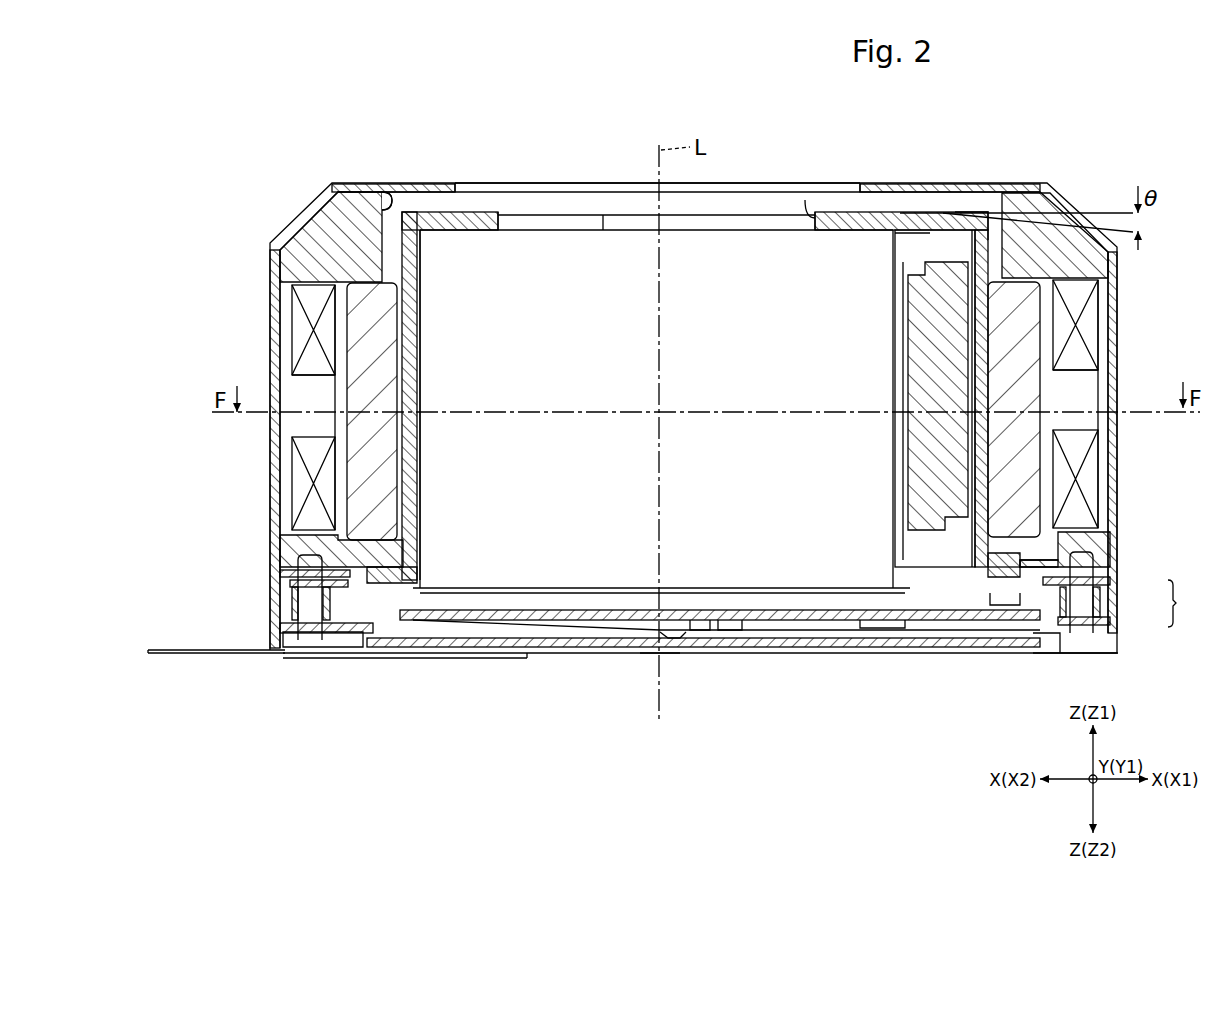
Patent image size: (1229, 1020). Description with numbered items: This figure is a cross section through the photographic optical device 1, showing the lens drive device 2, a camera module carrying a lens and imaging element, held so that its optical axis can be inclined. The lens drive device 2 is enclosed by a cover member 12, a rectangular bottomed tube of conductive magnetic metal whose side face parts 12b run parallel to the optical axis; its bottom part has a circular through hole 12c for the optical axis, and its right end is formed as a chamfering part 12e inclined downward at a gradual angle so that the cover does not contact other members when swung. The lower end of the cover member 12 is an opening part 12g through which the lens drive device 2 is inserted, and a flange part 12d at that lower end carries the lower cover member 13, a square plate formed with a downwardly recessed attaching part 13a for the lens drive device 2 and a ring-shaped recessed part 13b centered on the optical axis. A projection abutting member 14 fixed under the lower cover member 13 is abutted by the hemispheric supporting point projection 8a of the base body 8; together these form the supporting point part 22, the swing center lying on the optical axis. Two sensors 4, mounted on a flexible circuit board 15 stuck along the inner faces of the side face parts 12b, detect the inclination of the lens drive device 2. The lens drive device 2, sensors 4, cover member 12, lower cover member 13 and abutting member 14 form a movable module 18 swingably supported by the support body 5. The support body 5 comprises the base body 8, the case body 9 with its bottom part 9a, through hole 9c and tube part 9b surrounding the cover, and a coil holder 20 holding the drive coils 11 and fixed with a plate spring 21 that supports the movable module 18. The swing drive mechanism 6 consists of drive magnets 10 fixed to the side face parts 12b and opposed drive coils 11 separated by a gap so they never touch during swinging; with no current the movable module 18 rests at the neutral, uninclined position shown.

The photographic optical device 1 is at (1015, 153).
The lens drive device 2 is at (603, 228).
The sensor 4 is at (908, 470).
The support body 5 is at (1180, 603).
The swing drive mechanism 6 is at (1100, 370).
The base body 8 is at (1110, 620).
The supporting point projection 8a is at (671, 640).
The case body 9 is at (1118, 592).
The bottom part 9a is at (417, 190).
The tube part 9b is at (1117, 288).
The through hole 9c is at (457, 190).
The drive magnet 10 is at (347, 390).
The drive coil 11 is at (287, 318).
The cover member 12 is at (852, 212).
The side face part 12b is at (402, 336).
The through hole 12c is at (806, 205).
The flange part 12d is at (1037, 560).
The chamfering part 12e is at (962, 210).
The opening part 12g is at (972, 577).
The lower cover member 13 is at (937, 592).
The attaching part 13a is at (885, 622).
The ring-shaped recessed part 13b is at (729, 633).
The projection abutting member 14 is at (699, 633).
The circuit board 15 is at (208, 656).
The movable module 18 is at (524, 206).
The coil holder 20 is at (384, 206).
The plate spring 21 is at (1003, 590).
The supporting point part 22 is at (648, 664).